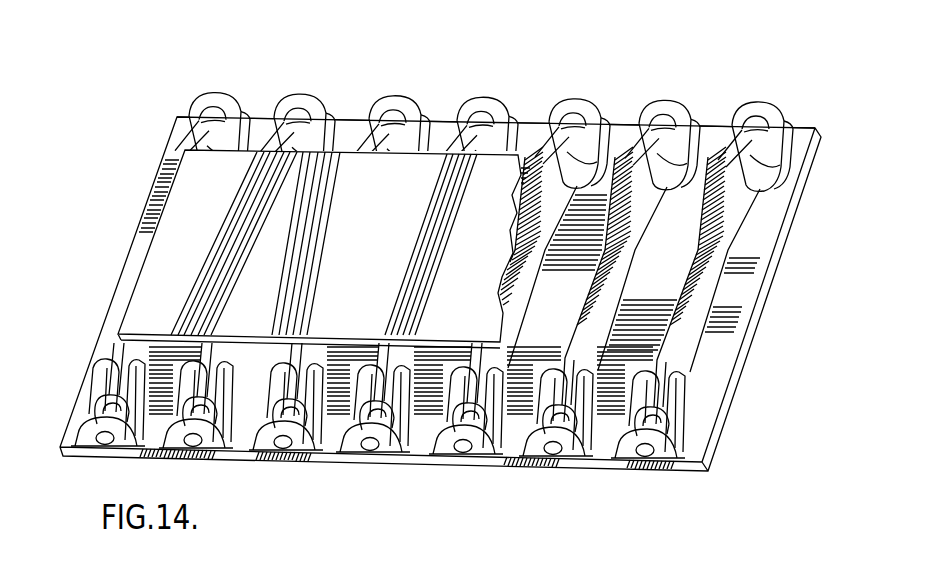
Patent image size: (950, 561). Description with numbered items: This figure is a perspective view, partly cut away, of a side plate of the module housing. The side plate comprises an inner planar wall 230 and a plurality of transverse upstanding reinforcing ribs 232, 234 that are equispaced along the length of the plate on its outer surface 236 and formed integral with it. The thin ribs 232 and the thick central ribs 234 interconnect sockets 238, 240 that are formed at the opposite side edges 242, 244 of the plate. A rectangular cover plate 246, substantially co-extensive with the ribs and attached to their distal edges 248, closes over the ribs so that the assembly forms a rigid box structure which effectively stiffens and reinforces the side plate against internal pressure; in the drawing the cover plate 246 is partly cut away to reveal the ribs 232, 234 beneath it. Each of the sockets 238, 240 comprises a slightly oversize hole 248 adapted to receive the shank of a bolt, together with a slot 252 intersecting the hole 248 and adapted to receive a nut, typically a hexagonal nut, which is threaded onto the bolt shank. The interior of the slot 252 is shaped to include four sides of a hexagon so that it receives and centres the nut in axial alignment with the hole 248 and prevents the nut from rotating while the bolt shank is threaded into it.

The inner planar wall 230 is at (753, 340).
The thin ribs 232 is at (640, 215).
The thick central ribs 234 is at (612, 125).
The outer surface 236 is at (718, 350).
The socket 238 is at (767, 147).
The socket 240 is at (683, 453).
The side edge 242 is at (440, 130).
The side edge 244 is at (502, 467).
The cover plate 246 is at (337, 167).
The distal edges 248 is at (702, 235).
The slot 252 is at (100, 395).